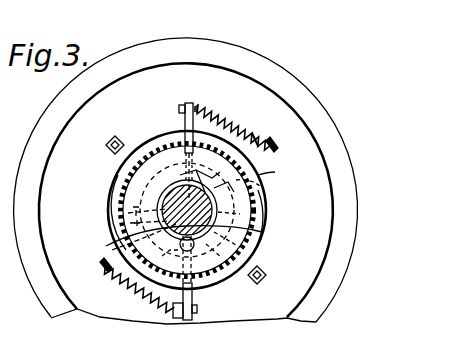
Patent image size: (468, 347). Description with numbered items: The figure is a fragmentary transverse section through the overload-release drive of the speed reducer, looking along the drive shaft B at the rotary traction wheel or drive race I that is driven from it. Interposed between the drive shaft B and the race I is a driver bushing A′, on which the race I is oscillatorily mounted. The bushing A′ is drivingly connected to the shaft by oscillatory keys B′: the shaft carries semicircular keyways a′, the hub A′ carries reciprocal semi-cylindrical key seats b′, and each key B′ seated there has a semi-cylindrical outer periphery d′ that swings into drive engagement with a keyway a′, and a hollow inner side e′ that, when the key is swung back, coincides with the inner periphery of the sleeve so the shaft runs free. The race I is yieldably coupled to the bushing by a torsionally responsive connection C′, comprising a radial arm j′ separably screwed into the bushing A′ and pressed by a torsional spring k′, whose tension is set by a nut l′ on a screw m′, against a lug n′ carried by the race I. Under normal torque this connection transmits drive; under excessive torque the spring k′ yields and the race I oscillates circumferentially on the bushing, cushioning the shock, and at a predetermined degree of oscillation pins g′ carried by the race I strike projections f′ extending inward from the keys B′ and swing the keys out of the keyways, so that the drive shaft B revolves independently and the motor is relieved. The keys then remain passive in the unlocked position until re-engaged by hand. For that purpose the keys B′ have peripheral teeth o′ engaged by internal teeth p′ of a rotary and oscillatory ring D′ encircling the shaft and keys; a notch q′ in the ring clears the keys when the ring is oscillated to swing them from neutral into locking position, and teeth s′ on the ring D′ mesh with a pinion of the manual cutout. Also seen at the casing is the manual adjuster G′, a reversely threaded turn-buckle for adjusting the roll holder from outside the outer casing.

The rotary traction wheel I is at (186, 181).
The manual adjuster G′ is at (40, 176).
The bushing A′ is at (266, 203).
The rotary and oscillatory ring D′ is at (260, 222).
The oscillatory keys B′ is at (178, 182).
The drive shaft B is at (120, 243).
The projections f′ is at (179, 210).
The hub c′ is at (160, 196).
The lug n′ is at (192, 103).
The radial arms j′ is at (179, 110).
The torsionally responsive connection C′ is at (234, 122).
The torsional spring k′ is at (255, 136).
The nut l′ is at (278, 150).
The screw m′ is at (275, 172).
The semi-cylindrical key seats b′ is at (204, 172).
The semicircular keyways a′ is at (226, 181).
The teeth on the ring s′ is at (256, 185).
The notch q′ is at (235, 211).
The internal teeth p′ is at (231, 237).
The semi-cylindrical outer peripheries d′ is at (223, 256).
The peripheral teeth o′ is at (194, 262).
The hollow inner sides e′ is at (162, 257).
The pins g′ is at (128, 238).